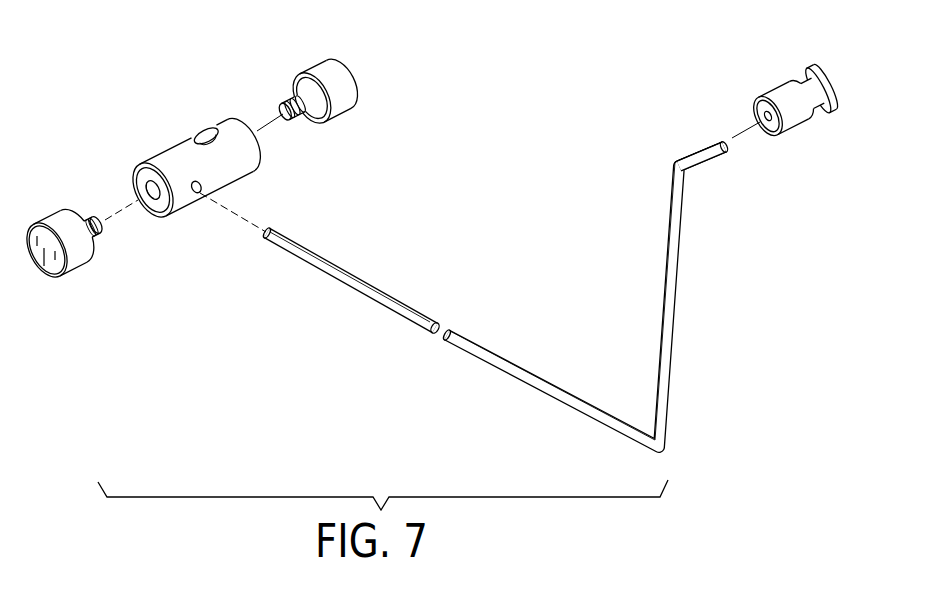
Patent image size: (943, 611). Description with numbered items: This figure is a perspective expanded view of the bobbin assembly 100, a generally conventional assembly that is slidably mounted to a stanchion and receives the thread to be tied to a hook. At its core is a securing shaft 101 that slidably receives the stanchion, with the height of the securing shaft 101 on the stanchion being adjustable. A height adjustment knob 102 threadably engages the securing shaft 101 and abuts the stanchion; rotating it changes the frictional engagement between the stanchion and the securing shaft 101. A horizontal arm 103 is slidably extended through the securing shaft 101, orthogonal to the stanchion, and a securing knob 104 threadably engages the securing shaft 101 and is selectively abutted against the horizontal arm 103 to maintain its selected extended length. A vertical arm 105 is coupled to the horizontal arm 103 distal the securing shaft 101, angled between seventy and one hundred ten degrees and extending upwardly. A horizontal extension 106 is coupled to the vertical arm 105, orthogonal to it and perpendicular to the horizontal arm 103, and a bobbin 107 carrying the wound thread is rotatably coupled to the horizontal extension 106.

The bobbin assembly 100 is at (648, 75).
The securing shaft 101 is at (173, 147).
The height adjustment knob 102 is at (345, 116).
The horizontal arm 103 is at (503, 357).
The securing knob 104 is at (48, 213).
The vertical arm 105 is at (673, 320).
The horizontal extension 106 is at (703, 148).
The bobbin 107 is at (797, 124).